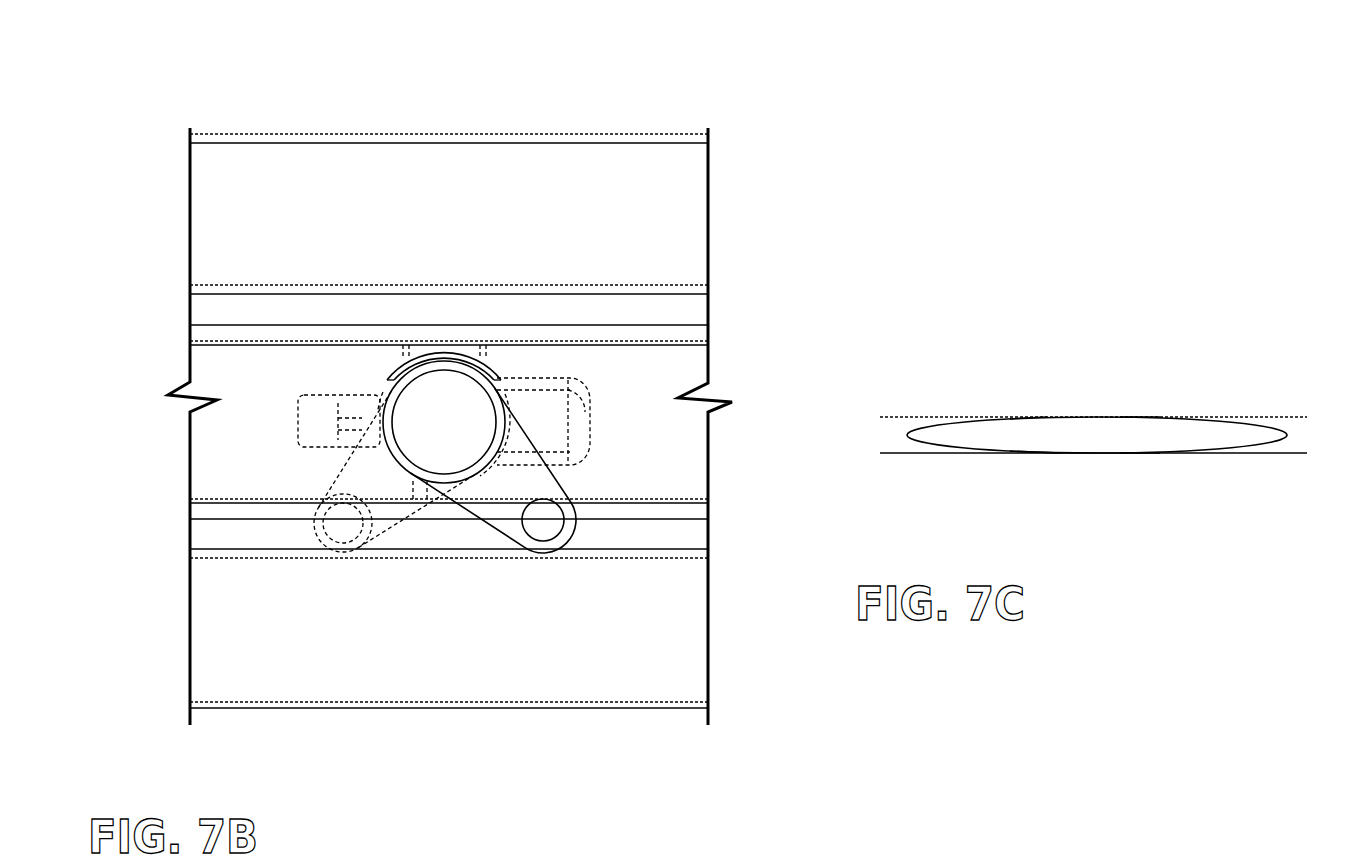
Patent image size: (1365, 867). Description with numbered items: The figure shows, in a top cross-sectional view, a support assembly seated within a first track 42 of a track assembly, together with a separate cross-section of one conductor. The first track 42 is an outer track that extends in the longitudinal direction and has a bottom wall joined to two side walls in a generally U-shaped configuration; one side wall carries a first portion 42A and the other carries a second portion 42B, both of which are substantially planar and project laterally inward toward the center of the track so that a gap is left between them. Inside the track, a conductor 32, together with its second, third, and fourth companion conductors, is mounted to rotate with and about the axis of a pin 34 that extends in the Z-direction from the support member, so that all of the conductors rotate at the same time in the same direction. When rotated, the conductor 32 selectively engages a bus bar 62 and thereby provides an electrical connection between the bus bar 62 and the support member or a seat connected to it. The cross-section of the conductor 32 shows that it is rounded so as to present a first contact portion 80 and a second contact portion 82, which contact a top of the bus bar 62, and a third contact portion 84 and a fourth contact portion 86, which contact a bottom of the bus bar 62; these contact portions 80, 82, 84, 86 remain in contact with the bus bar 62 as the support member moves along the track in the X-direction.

In FIG. 7B, the conductor 32 is at (447, 75).
In FIG. 7C, the conductor 32 is at (1300, 436).
In FIG. 7B, the pin/shaft 34 is at (419, 424).
In FIG. 7B, the first track 42 is at (568, 305).
In FIG. 7B, the first portion 42A is at (615, 295).
In FIG. 7B, the second portion 42B is at (623, 545).
In FIG. 7C, the bus bar 62 is at (1264, 417).
In FIG. 7C, the first contact portion 80 is at (1047, 417).
In FIG. 7C, the second contact portion 82 is at (1143, 417).
In FIG. 7C, the third contact portion 84 is at (1047, 453).
In FIG. 7C, the fourth contact portion 86 is at (1142, 453).